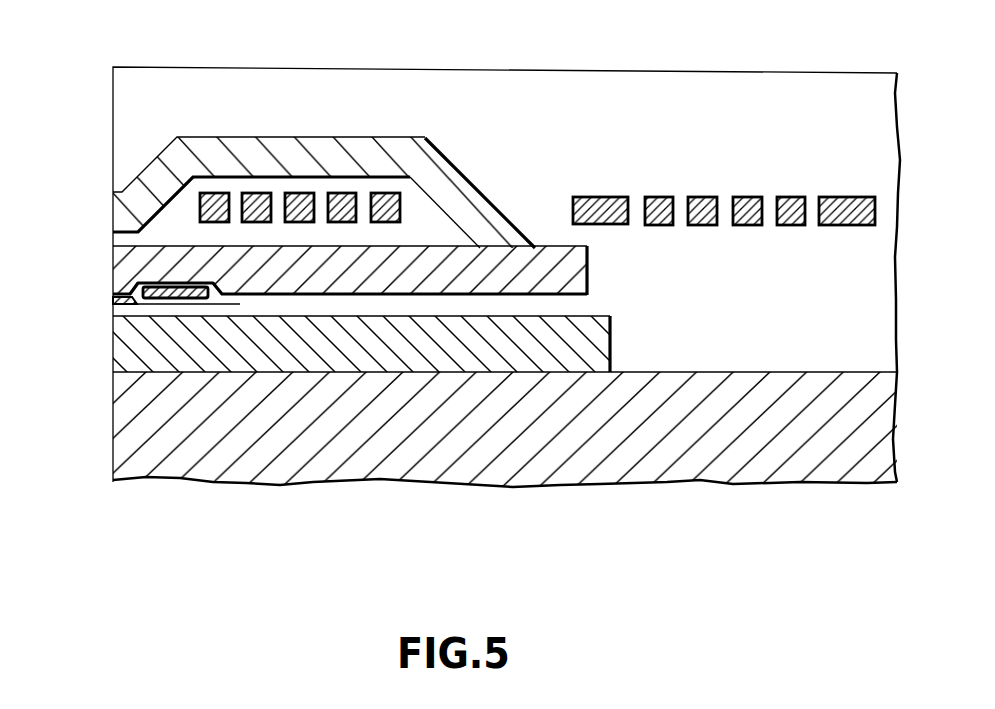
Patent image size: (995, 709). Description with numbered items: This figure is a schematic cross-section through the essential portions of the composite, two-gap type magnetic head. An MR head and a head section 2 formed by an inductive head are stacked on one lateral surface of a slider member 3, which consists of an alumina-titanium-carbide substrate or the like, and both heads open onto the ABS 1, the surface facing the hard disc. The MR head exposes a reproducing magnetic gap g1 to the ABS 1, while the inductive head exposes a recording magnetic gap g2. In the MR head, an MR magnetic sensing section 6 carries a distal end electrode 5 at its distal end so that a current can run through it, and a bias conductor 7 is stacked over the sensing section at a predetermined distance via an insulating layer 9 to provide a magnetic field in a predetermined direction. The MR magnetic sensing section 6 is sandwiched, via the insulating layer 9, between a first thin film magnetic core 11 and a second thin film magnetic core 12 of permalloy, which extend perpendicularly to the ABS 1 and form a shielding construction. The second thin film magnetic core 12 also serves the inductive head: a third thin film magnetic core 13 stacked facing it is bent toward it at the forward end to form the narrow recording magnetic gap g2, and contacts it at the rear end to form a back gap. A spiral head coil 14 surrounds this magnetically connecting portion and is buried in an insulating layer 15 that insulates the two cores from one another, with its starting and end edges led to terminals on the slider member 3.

The ABS 1 is at (115, 418).
The head section 2 is at (96, 174).
The slider member 3 is at (492, 460).
The distal end electrode 5 is at (113, 320).
The MR magnetic sensing section 6 is at (130, 290).
The bias conductor 7 is at (181, 287).
The insulating layer 9 is at (325, 310).
The first thin film magnetic core 11 is at (115, 355).
The second thin film magnetic core 12 is at (120, 257).
The third thin film magnetic core 13 is at (219, 146).
The head coil 14 is at (347, 200).
The insulating layer 15 is at (415, 203).
The reproducing magnetic gap g1 is at (116, 312).
The recording magnetic gap g2 is at (113, 235).